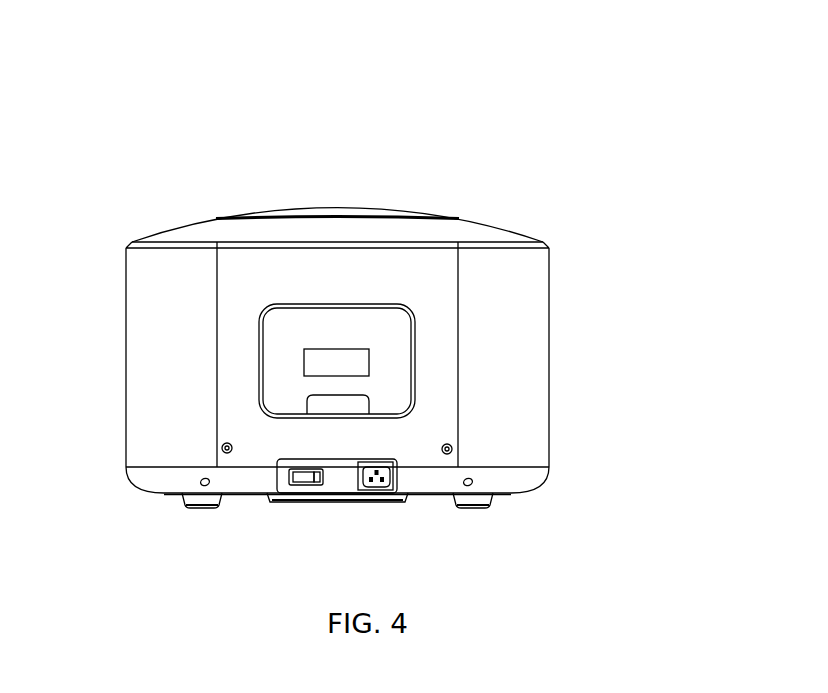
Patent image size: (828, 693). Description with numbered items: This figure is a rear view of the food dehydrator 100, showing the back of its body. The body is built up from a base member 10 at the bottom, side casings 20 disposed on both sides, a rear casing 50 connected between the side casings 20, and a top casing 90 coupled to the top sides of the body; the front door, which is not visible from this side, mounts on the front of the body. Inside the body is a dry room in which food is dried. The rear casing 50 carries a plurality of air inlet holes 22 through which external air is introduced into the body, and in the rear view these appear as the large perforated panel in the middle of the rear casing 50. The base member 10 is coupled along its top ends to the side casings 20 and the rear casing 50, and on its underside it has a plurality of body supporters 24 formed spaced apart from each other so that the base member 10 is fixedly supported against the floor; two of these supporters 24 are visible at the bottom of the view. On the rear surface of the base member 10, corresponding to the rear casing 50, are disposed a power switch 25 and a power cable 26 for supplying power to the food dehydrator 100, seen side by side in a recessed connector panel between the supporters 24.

The food dehydrator 100 is at (160, 183).
The top casing 90 is at (339, 209).
The rear casing 50 is at (430, 275).
The side casings 20 is at (537, 317).
The air inlet holes 22 is at (400, 355).
The base member 10 is at (545, 473).
The body supporters 24 is at (196, 501).
The power switch 25 is at (300, 481).
The power cable 26 is at (381, 491).